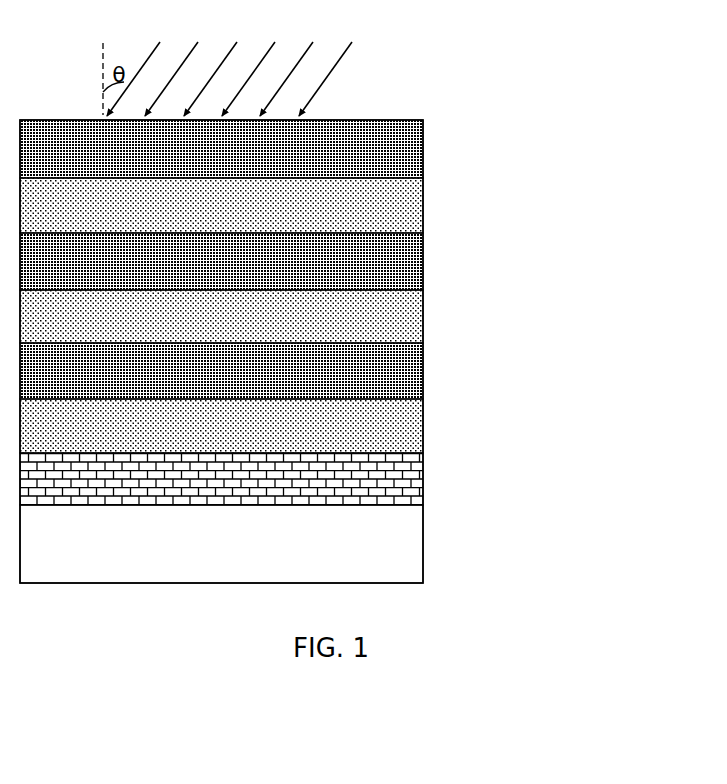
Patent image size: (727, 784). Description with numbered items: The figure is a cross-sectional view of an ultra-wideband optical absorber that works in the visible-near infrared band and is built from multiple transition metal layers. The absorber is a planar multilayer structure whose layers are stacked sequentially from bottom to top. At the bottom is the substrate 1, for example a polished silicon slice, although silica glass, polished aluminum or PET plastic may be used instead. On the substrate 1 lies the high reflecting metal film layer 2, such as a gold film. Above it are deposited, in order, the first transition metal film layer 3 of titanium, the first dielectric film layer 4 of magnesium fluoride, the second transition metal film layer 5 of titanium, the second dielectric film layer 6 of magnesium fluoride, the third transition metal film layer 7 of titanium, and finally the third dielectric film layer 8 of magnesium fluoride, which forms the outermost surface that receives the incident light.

The substrate 1 is at (400, 548).
The high reflecting metal film layer 2 is at (400, 486).
The first transition metal film layer 3 is at (400, 428).
The first dielectric film layer 4 is at (400, 372).
The second transition metal film layer 5 is at (400, 317).
The second dielectric film layer 6 is at (400, 260).
The third transition metal film layer 7 is at (400, 203).
The third dielectric film layer 8 is at (400, 147).